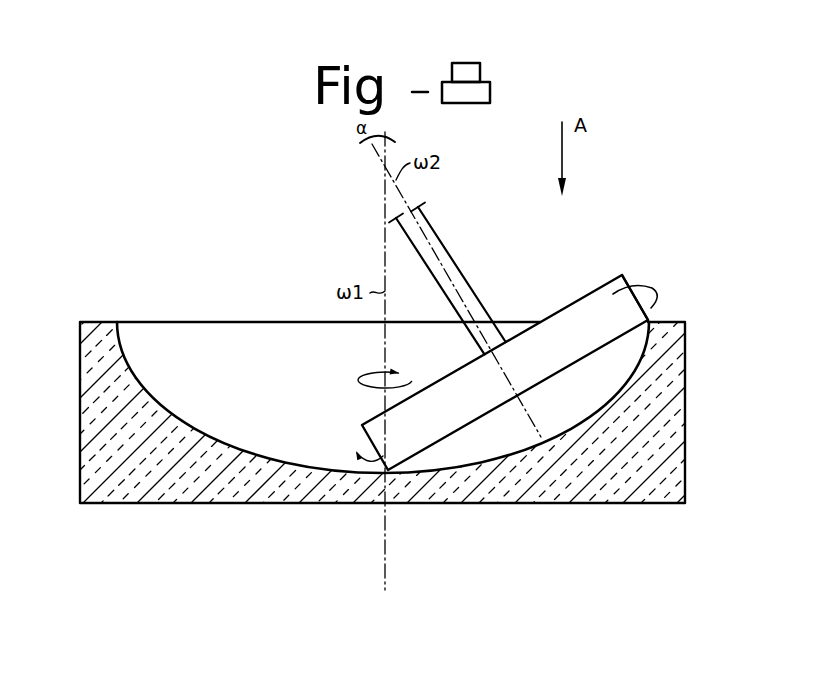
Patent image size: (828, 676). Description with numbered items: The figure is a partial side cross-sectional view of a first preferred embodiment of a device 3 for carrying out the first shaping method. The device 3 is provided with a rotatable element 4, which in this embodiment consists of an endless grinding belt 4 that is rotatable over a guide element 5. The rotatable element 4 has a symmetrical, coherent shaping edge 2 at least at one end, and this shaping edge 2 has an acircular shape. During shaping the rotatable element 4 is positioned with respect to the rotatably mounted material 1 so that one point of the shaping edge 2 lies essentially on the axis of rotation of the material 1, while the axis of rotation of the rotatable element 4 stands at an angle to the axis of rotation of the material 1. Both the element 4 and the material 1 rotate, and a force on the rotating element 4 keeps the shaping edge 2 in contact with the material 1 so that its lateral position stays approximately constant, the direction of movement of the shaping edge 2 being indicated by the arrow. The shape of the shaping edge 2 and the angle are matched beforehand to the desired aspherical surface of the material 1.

The material 1 is at (86, 375).
The shaping edge 2 is at (563, 368).
The device 3 is at (200, 222).
The rotatable element 4 is at (625, 317).
The guide element 5 is at (437, 243).